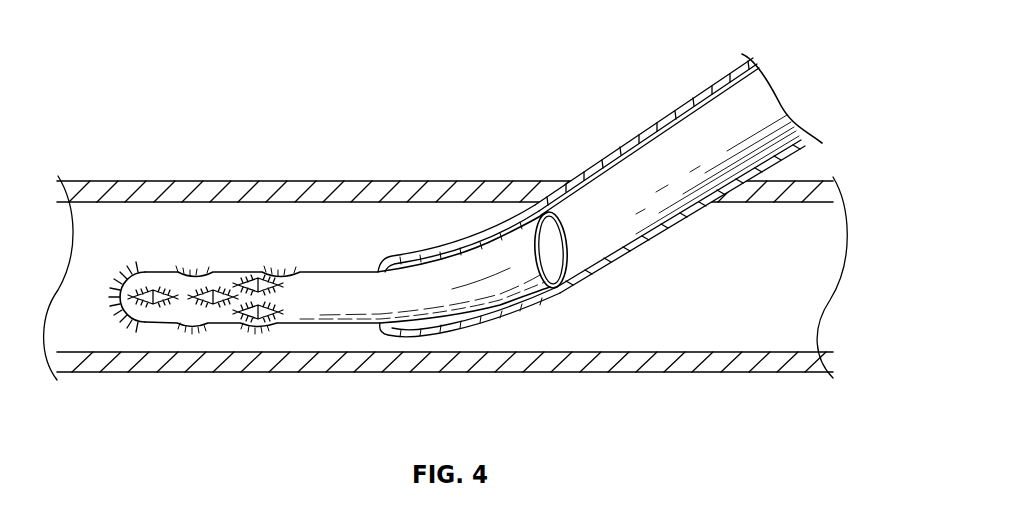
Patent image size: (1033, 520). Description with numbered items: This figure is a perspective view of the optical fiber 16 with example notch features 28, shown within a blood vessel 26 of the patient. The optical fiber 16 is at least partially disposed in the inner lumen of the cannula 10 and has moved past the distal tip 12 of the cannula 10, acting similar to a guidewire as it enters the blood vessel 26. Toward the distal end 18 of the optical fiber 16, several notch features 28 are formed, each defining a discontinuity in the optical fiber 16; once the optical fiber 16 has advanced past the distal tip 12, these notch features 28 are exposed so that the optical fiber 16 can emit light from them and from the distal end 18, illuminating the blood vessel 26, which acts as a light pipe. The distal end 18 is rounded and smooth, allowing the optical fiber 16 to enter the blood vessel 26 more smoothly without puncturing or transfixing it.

The cannula 10 is at (700, 122).
The distal tip 12 is at (553, 292).
The optical fiber 16 is at (362, 287).
The distal end 18 is at (118, 299).
The blood vessel 26 is at (134, 246).
The notch features 28 is at (232, 290).